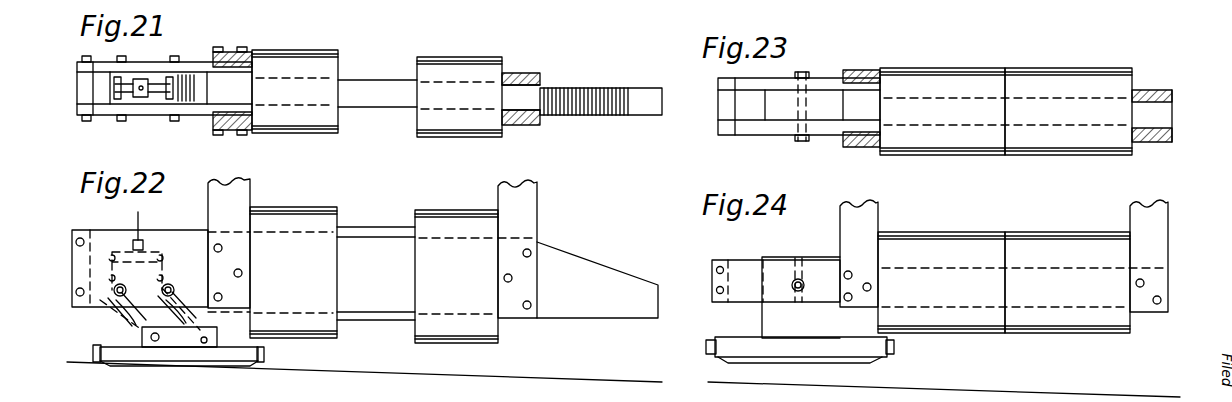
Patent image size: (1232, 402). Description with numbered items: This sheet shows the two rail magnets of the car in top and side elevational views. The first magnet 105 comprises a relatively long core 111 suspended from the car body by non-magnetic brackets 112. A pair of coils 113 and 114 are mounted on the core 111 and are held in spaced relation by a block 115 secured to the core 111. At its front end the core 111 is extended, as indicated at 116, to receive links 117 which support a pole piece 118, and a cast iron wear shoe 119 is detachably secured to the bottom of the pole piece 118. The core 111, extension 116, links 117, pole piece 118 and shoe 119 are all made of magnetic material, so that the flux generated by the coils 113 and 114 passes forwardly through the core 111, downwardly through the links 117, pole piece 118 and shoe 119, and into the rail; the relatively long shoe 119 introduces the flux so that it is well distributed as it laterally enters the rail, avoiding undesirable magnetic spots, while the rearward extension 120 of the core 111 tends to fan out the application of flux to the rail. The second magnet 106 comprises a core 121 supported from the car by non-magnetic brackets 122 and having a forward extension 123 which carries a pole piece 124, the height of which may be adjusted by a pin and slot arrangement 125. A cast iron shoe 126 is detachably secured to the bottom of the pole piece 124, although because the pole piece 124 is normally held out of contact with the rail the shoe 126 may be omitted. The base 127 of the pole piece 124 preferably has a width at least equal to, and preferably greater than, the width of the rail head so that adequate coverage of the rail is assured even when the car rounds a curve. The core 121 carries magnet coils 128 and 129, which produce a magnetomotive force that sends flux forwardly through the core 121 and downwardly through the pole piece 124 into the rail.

In FIG. 21, the first magnet 105 is at (546, 141).
In FIG. 24, the roller assembly 106 is at (1132, 348).
In FIG. 21, the core 111 is at (371, 80).
In FIG. 22, the core 111 is at (365, 296).
In FIG. 21, the non-magnetic brackets 112 is at (233, 130).
In FIG. 22, the non-magnetic brackets 112 is at (223, 183).
In FIG. 21, the coil 113 is at (337, 57).
In FIG. 22, the coil 113 is at (297, 216).
In FIG. 21, the coil 114 is at (445, 60).
In FIG. 22, the coil 114 is at (470, 215).
In FIG. 21, the block 115 is at (366, 107).
In FIG. 22, the block 115 is at (367, 232).
In FIG. 21, the extension 116 is at (147, 62).
In FIG. 22, the extension 116 is at (185, 244).
In FIG. 21, the links 117 is at (132, 97).
In FIG. 22, the links 117 is at (128, 317).
In FIG. 21, the pole piece 118 is at (193, 63).
In FIG. 22, the pole piece 118 is at (177, 350).
In FIG. 22, the cast iron wear shoe 119 is at (208, 367).
In FIG. 21, the rearward extension 120 is at (610, 100).
In FIG. 22, the rearward extension 120 is at (580, 270).
In FIG. 23, the core 121 is at (1148, 112).
In FIG. 23, the non-magnetic brackets 122 is at (860, 147).
In FIG. 24, the non-magnetic brackets 122 is at (860, 213).
In FIG. 23, the forward extension 123 is at (783, 84).
In FIG. 24, the forward extension 123 is at (746, 271).
In FIG. 23, the pole piece 124 is at (790, 110).
In FIG. 24, the pole piece 124 is at (772, 318).
In FIG. 23, the pin and slot arrangement 125 is at (801, 140).
In FIG. 24, the pin and slot arrangement 125 is at (801, 281).
In FIG. 24, the cast iron shoe 126 is at (838, 357).
In FIG. 23, the base 127 is at (731, 134).
In FIG. 24, the base 127 is at (874, 346).
In FIG. 23, the magnet coil 128 is at (940, 70).
In FIG. 24, the magnet coil 128 is at (960, 243).
In FIG. 23, the magnet coil 129 is at (1112, 73).
In FIG. 24, the magnet coil 129 is at (1035, 245).